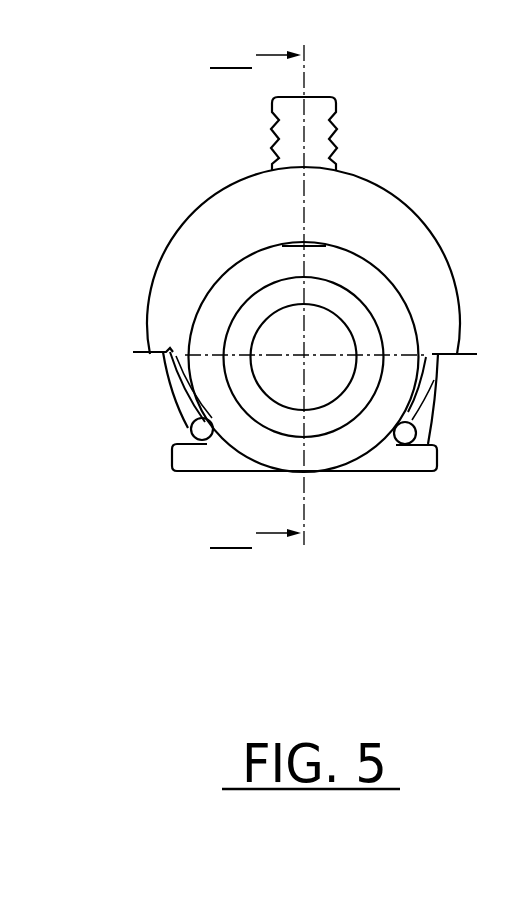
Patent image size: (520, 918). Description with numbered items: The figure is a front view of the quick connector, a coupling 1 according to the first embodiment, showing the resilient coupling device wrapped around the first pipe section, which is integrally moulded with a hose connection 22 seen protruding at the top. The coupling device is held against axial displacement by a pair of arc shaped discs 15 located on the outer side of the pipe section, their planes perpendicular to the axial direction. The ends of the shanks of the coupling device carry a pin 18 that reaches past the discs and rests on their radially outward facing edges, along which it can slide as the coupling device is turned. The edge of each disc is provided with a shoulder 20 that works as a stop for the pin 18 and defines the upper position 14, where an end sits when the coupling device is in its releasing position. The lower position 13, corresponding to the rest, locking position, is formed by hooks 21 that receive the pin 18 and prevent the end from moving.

The coupling 1 is at (192, 87).
The hose connection 22 is at (401, 150).
The arc shaped discs 15 is at (237, 208).
The shoulder 20 is at (150, 357).
The upper position 14 is at (145, 366).
The lower position 13 is at (160, 421).
The pin 18 is at (193, 433).
The hooks 21 is at (200, 458).